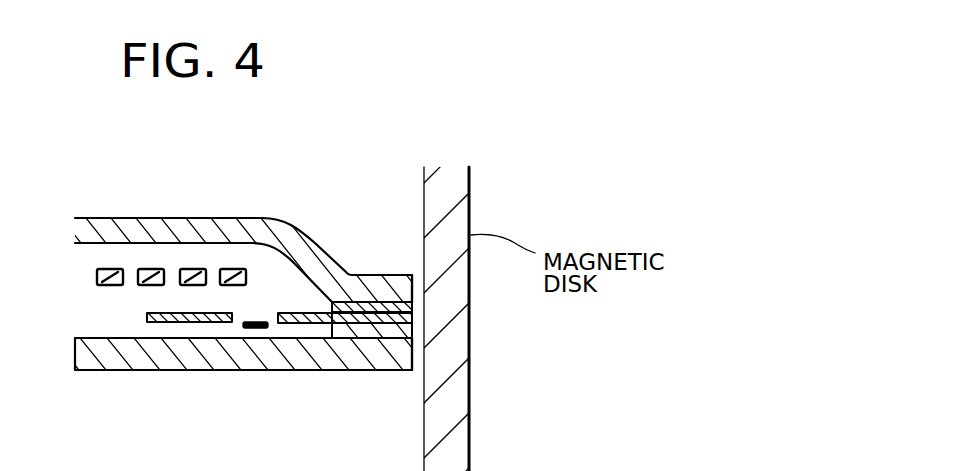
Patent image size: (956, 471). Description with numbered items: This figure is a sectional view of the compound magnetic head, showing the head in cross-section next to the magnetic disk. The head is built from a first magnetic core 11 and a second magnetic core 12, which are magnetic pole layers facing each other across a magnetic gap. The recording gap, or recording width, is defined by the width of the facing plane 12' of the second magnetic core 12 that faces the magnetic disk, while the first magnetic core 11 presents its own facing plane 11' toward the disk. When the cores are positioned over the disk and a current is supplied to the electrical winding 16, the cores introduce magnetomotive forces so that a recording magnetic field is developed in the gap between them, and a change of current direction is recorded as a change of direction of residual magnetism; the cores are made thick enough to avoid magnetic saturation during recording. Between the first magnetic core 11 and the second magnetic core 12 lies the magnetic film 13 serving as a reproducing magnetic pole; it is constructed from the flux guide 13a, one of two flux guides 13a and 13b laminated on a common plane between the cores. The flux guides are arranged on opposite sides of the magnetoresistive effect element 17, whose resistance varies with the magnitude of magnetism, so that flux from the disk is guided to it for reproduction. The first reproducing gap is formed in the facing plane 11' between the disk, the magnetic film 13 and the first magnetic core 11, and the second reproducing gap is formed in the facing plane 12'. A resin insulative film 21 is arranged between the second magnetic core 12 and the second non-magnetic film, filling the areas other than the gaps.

The first magnetic core 11 is at (241, 383).
The facing plane of the first magnetic core 11' is at (471, 350).
The second magnetic core 12 is at (396, 248).
The facing plane of the second magnetic core 12' is at (465, 294).
The magnetic film 13 is at (392, 320).
The flux guide 13a is at (300, 311).
The flux guide 13b is at (201, 323).
The electrical winding 16 is at (150, 277).
The magnetoresistive effect element 17 is at (257, 328).
The resin insulative film 21 is at (252, 258).